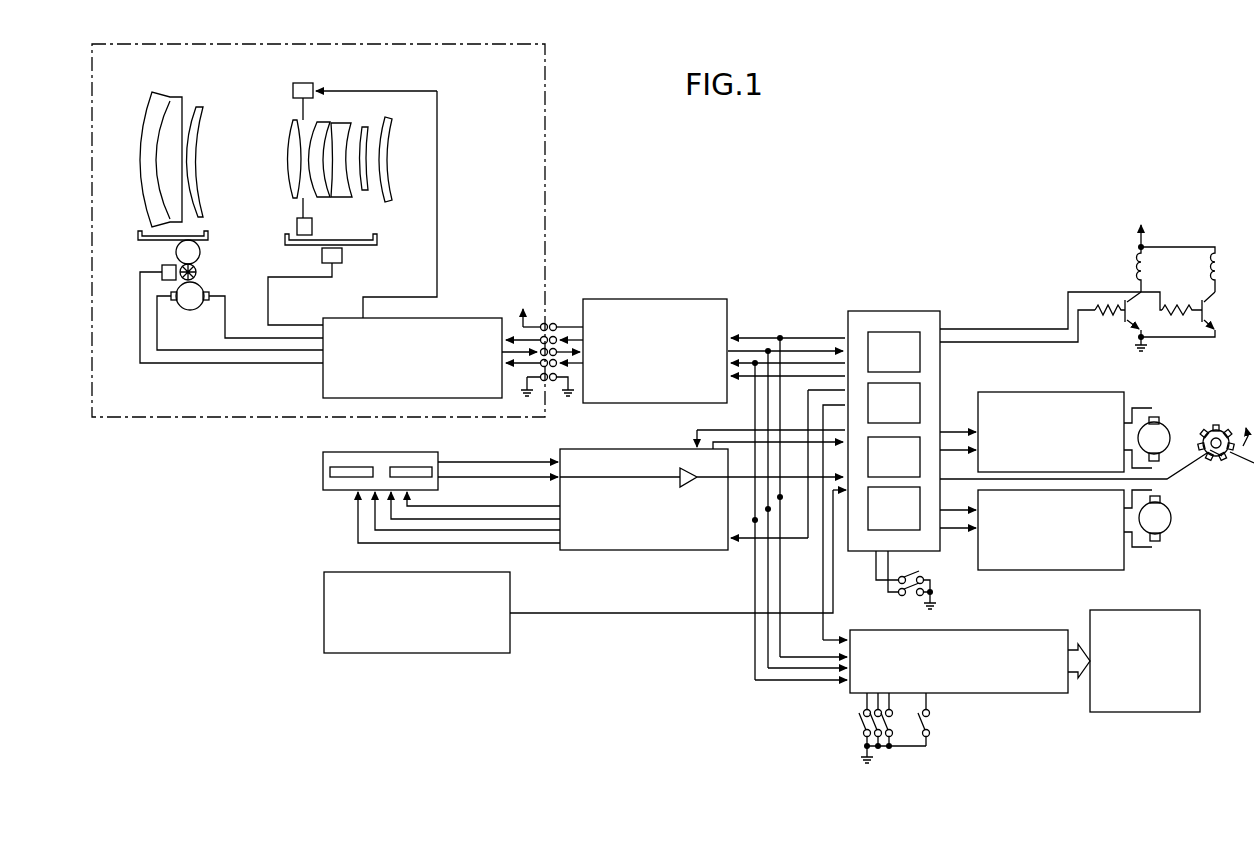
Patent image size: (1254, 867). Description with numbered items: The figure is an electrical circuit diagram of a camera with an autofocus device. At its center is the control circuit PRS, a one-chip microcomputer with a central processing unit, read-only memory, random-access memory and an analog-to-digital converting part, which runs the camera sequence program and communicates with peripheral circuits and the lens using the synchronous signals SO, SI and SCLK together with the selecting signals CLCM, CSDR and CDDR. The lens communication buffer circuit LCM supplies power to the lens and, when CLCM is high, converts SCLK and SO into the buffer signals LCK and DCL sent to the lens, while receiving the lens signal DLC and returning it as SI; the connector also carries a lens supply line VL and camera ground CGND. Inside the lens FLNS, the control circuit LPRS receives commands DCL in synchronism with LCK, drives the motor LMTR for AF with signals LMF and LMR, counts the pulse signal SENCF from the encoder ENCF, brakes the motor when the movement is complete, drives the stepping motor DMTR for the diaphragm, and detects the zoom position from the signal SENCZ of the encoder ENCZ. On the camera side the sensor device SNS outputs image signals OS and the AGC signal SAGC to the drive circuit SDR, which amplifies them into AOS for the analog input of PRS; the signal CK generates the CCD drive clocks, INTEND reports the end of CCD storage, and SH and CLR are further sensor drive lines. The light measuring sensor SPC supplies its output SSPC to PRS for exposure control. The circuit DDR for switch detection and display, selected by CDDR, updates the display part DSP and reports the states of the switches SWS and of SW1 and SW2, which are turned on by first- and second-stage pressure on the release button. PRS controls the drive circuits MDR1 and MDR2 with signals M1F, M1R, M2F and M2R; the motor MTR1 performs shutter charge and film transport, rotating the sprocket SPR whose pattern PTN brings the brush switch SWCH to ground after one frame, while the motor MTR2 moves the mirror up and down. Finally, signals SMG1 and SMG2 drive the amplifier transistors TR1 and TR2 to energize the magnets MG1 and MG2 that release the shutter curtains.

The lens FLNS is at (408, 44).
The stepping motor DMTR is at (301, 82).
The encoder ENCF is at (160, 272).
The motor for AF LMTR is at (200, 290).
The encoder ENCZ is at (343, 255).
The signal SENCZ is at (318, 323).
The signal LMF is at (316, 336).
The signal LMR is at (312, 352).
The pulse signal SENCF is at (318, 366).
The control circuit within the lens LPRS is at (450, 318).
The buffer signal LCK is at (575, 326).
The signal DLC is at (577, 339).
The buffer signal DCL is at (579, 351).
The lens power supply line VL is at (580, 362).
The lens communication buffer circuit LCM is at (656, 299).
The camera ground CGND is at (571, 398).
The communication selecting signal CDDR is at (845, 338).
The communication selecting signal CSDR is at (845, 350).
The selecting signal CLCM is at (845, 362).
The clock signal SCLK is at (845, 376).
The signal SI is at (845, 391).
The signal SO is at (845, 400).
The signal CK is at (843, 426).
The signal INTEND is at (735, 430).
The signal AOS is at (744, 474).
The control circuit PRS is at (900, 311).
The signal SMG1 is at (1051, 310).
The signal SMG2 is at (1017, 335).
The magnet MG1 is at (1221, 268).
The magnet MG2 is at (1146, 266).
The amplifier transistor TR1 is at (1218, 318).
The amplifier transistor TR2 is at (1133, 325).
The signal M1F is at (958, 423).
The signal M1R is at (958, 441).
The drive circuit MDR1 is at (1050, 385).
The electric motor MTR1 is at (1168, 424).
The sprocket SPR is at (1220, 426).
The pattern PTN is at (1222, 460).
The switch SWCH is at (1188, 471).
The signal M2F is at (958, 502).
The signal M2R is at (958, 520).
The drive circuit MDR2 is at (1036, 571).
The electric motor MTR2 is at (1167, 532).
The sensor device SNS is at (322, 476).
The output signal SAGC is at (452, 460).
The output signals OS is at (448, 480).
The sample hold signal SH is at (553, 531).
The clear signal CLR is at (556, 543).
The drive circuit SDR is at (638, 551).
The light measuring sensor SPC is at (323, 614).
The output SSPC is at (520, 615).
The switch SW1 is at (923, 578).
The switch SW2 is at (906, 592).
The circuit for switch detection and display DDR is at (980, 630).
The display part DSP is at (1124, 712).
The switch group SWS is at (930, 721).